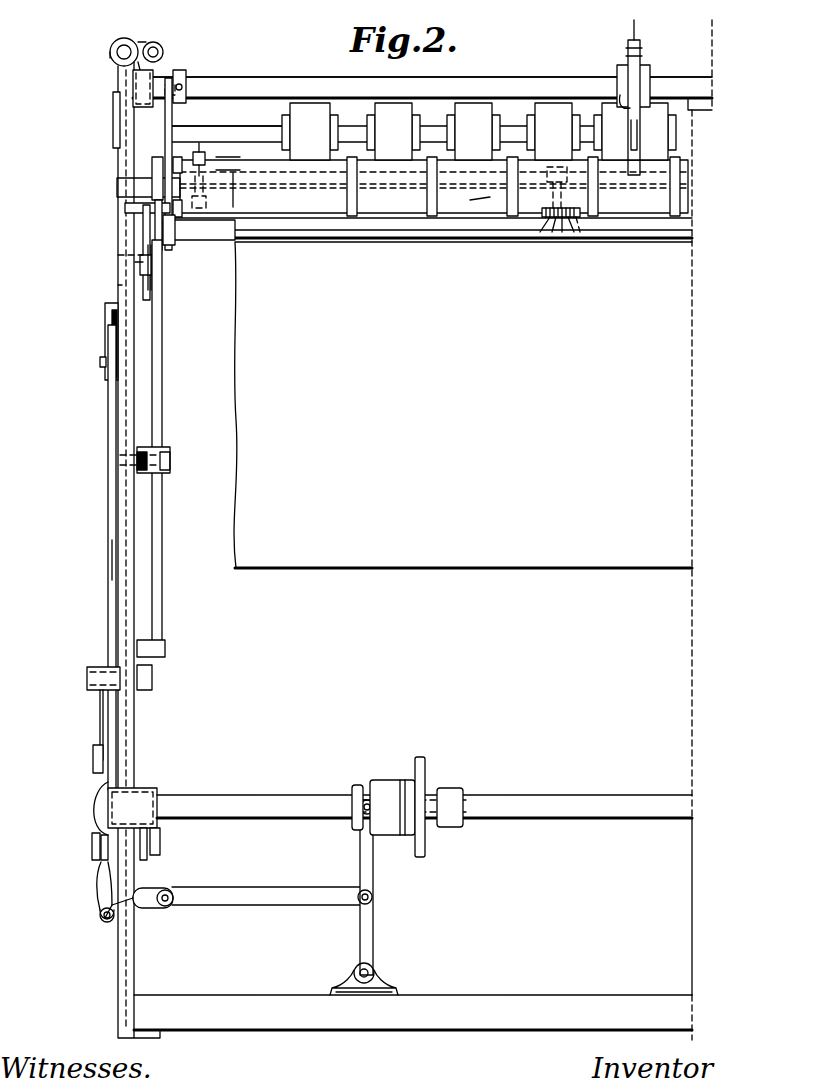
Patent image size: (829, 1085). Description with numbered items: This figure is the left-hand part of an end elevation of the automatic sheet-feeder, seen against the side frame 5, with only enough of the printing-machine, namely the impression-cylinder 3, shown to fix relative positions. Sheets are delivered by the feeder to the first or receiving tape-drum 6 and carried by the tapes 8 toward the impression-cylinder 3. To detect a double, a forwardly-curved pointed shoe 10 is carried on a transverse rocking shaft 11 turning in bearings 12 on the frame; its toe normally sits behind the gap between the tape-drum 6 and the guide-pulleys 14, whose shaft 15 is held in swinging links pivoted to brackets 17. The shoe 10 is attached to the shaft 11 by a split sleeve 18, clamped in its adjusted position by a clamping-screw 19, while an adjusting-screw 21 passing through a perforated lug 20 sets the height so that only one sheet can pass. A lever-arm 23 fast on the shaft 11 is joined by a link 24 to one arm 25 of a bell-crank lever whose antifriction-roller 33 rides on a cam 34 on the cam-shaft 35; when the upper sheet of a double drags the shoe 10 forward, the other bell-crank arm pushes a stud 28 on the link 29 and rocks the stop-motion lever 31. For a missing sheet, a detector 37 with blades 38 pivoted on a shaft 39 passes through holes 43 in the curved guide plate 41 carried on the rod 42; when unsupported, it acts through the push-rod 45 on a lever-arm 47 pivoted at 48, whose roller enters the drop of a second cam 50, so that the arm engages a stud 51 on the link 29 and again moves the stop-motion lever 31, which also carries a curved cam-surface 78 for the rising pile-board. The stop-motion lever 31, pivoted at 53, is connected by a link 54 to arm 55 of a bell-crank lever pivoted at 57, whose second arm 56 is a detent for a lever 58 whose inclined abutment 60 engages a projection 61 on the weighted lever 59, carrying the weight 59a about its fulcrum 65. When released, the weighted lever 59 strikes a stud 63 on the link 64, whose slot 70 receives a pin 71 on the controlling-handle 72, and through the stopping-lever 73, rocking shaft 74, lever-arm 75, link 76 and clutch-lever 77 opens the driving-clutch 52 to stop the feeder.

The impression-cylinder 3 is at (463, 405).
The side frame 5 is at (125, 988).
The first or receiving tape-drum 6 is at (434, 186).
The tapes 8 is at (478, 202).
The shoe 10 is at (640, 118).
The transverse rod or shaft 11 is at (288, 80).
The bearings 12 is at (133, 80).
The guide-pulleys 14 is at (479, 131).
The shaft 15 is at (262, 135).
The brackets 17 is at (115, 140).
The split sleeve 18 is at (650, 80).
The clamping-screw 19 is at (622, 95).
The perforated lug 20 is at (640, 72).
The adjusting-screw 21 is at (630, 52).
The lever-arm 23 is at (186, 75).
The link 24 is at (172, 116).
The arm of bell-crank lever 25 is at (125, 210).
The stud 28 is at (160, 285).
The link 29 is at (150, 285).
The stop-motion lever 31 is at (162, 390).
The antifriction-roller 33 is at (180, 235).
The cam 34 is at (150, 237).
The cam-shaft 35 is at (265, 240).
The detector 37 is at (580, 232).
The blades or fingers 38 is at (555, 232).
The shaft 39 is at (220, 197).
The curved plate 41 is at (380, 240).
The rod 42 is at (285, 162).
The holes 43 is at (540, 232).
The push-rod 45 is at (118, 255).
The lever-arm 47 is at (135, 262).
The pivot 48 is at (117, 190).
The cam 50 is at (145, 257).
The stud 51 is at (118, 282).
The driving-clutch 52 is at (385, 782).
The pivot 53 is at (170, 455).
The link 54 is at (160, 655).
The arm of bell-crank lever 55 is at (152, 678).
The lever-arm 56 is at (103, 695).
The pivot 57 is at (87, 680).
The lever 58 is at (100, 725).
The weighted lever 59 is at (120, 815).
The weight 59a is at (95, 805).
The inclined abutment 60 is at (103, 880).
The stud or projection 61 is at (97, 858).
The stud 63 is at (147, 845).
The link 64 is at (112, 558).
The fulcrum 65 is at (92, 848).
The slot 70 is at (108, 392).
The pin 71 is at (100, 362).
The controlling-handle 72 is at (105, 310).
The stopping-lever 73 is at (105, 922).
The rocking shaft 74 is at (150, 907).
The lever-arm 75 is at (147, 893).
The link 76 is at (268, 888).
The clutch-lever 77 is at (372, 850).
The curved cam-surface 78 is at (150, 163).